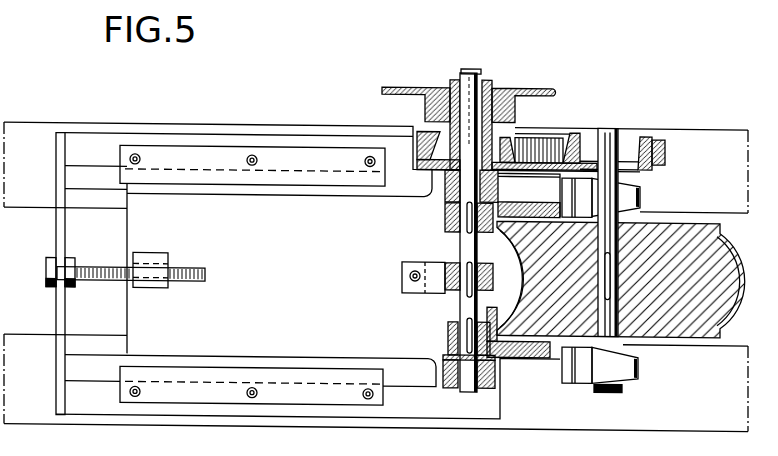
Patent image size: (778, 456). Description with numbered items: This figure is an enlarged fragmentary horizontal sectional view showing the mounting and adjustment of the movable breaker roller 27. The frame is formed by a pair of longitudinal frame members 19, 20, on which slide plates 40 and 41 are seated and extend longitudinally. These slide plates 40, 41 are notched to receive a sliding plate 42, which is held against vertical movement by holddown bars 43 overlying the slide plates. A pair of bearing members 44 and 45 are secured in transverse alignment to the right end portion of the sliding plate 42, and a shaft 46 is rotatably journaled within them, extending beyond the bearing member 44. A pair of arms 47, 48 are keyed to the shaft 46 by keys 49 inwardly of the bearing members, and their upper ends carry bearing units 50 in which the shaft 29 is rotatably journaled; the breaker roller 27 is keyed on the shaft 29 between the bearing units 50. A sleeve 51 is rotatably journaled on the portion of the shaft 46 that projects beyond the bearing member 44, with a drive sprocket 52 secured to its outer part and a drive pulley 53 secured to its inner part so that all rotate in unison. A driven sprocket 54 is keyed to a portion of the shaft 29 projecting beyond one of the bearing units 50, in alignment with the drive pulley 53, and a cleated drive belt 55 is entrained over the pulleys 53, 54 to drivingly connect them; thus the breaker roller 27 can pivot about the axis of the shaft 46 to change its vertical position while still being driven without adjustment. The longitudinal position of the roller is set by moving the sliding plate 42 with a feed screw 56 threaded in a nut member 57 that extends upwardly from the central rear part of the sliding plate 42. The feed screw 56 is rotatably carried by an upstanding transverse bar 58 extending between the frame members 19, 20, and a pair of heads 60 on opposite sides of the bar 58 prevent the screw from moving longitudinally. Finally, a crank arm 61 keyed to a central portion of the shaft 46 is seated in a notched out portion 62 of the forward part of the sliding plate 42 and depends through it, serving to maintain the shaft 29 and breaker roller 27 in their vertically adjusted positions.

The longitudinal frame member 19 is at (29, 122).
The longitudinal frame member 20 is at (22, 416).
The breaker roller 27 is at (700, 310).
The shaft 29 is at (615, 388).
The slide plate 40 is at (283, 137).
The slide plate 41 is at (325, 409).
The sliding plate 42 is at (127, 312).
The holddown bar 43 is at (206, 145).
The bearing member 44 is at (445, 190).
The bearing member 45 is at (441, 360).
The shaft 46 is at (470, 388).
The arm 47 is at (545, 197).
The arm 48 is at (520, 356).
The key 49 is at (467, 225).
The bearing unit 50 is at (640, 195).
The sleeve 51 is at (492, 136).
The drive sprocket 52 is at (540, 83).
The drive pulley 53 is at (428, 140).
The driven sprocket 54 is at (648, 130).
The cleated drive belt 55 is at (665, 145).
The feed screw 56 is at (187, 279).
The nut member 57 is at (152, 256).
The transverse bar 58 is at (56, 232).
The head 60 is at (70, 257).
The crank arm 61 is at (493, 270).
The notched out portion 62 is at (432, 289).